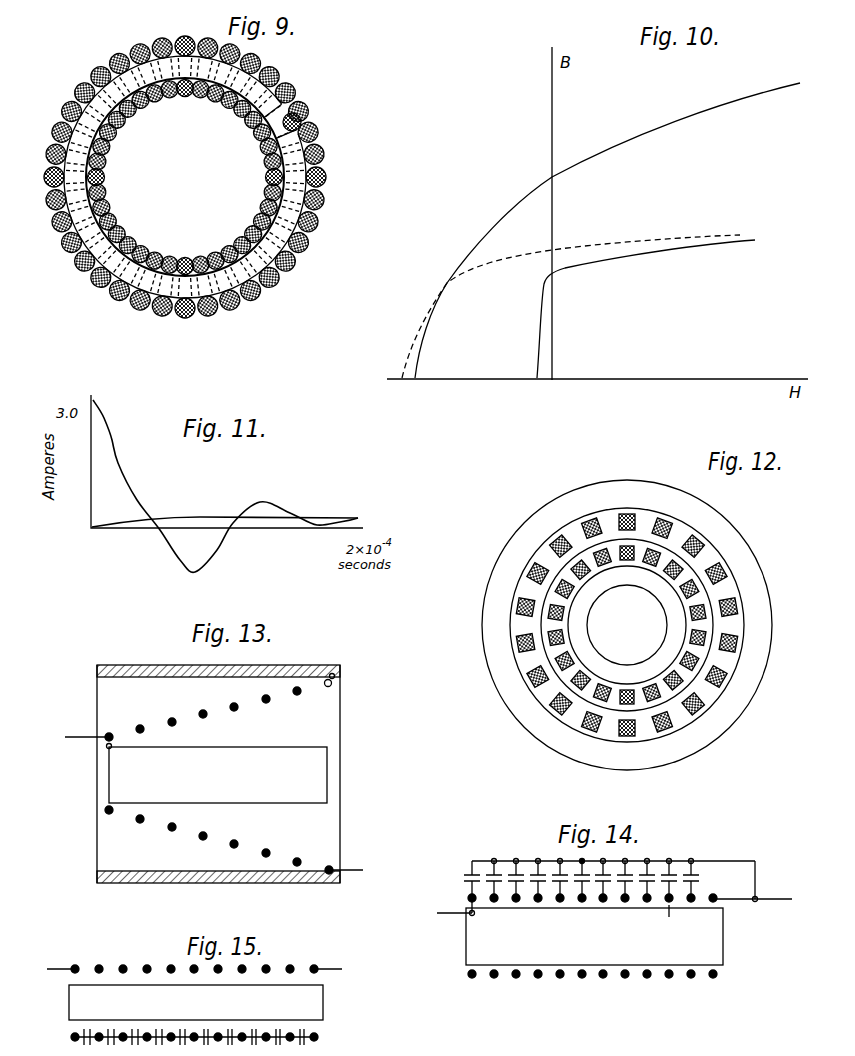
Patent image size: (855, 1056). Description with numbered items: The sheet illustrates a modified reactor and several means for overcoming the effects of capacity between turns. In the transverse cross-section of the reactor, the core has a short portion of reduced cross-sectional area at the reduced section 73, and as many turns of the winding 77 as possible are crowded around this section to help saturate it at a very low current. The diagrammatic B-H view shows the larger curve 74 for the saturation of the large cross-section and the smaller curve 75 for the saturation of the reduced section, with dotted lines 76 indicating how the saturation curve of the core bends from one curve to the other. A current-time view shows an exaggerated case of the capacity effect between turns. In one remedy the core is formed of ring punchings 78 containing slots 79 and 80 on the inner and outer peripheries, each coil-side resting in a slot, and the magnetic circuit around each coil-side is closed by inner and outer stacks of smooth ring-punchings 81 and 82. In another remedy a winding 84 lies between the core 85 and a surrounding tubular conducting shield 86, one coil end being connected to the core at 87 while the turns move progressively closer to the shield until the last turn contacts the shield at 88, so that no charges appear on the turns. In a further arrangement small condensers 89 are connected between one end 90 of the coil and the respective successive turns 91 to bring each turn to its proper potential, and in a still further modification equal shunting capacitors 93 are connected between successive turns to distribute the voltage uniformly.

In FIG. 9, the reduced section 73 is at (302, 124).
In FIG. 9, the winding 77 is at (309, 110).
In FIG. 10, the larger curve 74 is at (658, 130).
In FIG. 10, the smaller curve 75 is at (658, 250).
In FIG. 10, the dotted lines 76 is at (517, 253).
In FIG. 12, the ring punchings 78 is at (607, 515).
In FIG. 12, the slots 79 is at (563, 587).
In FIG. 12, the slots 80 is at (582, 525).
In FIG. 12, the inner stack of smooth ring-punchings 81 is at (588, 628).
In FIG. 12, the outer stack of smooth ring-punchings 82 is at (498, 692).
In FIG. 13, the winding 84 is at (296, 706).
In FIG. 13, the core 85 is at (327, 760).
In FIG. 13, the tubular conducting shield 86 is at (335, 674).
In FIG. 13, the connection of coil end to core 87 is at (107, 743).
In FIG. 13, the contact of coil end with shield 88 is at (332, 682).
In FIG. 14, the small condensers 89 is at (700, 881).
In FIG. 14, the end of the coil 90 is at (755, 901).
In FIG. 14, the successive turns 91 is at (689, 901).
In FIG. 15, the shunting capacitors 93 is at (137, 1030).